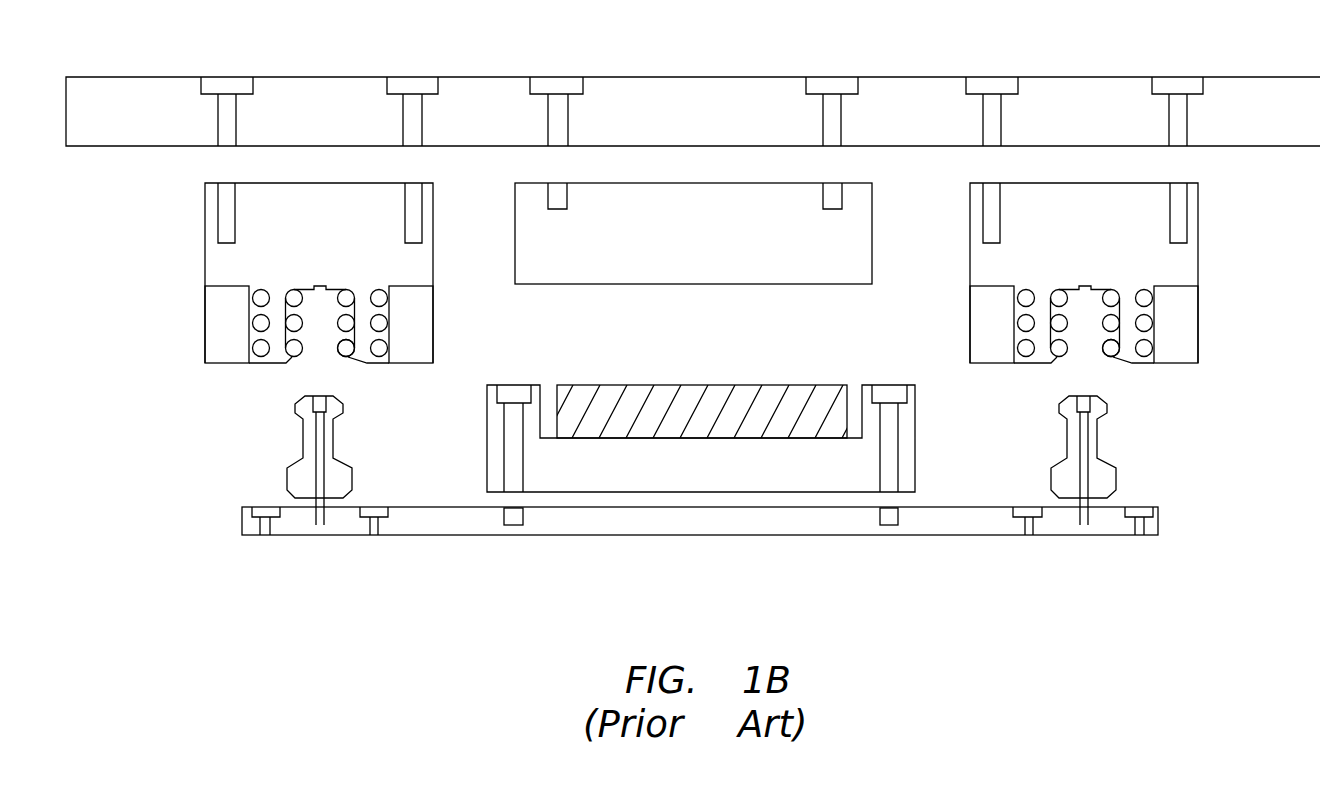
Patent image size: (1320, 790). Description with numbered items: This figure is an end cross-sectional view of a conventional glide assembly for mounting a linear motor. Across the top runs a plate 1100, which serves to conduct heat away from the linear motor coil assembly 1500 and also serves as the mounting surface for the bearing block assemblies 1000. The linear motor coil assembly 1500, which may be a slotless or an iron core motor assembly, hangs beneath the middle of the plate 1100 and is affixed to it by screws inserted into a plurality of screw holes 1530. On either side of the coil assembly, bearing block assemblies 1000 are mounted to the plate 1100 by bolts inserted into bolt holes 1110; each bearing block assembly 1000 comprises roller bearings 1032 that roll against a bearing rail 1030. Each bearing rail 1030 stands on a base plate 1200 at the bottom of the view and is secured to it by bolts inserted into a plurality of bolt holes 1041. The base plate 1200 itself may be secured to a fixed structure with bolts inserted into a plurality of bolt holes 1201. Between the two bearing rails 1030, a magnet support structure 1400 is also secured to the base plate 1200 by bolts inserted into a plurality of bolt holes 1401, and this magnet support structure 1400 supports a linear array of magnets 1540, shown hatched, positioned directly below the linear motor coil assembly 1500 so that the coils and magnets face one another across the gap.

The bearing block assembly 1000 is at (263, 259).
The bearing rail 1030 is at (300, 467).
The roller bearing 1032 is at (353, 354).
The bolt hole 1041 is at (340, 439).
The plate 1100 is at (648, 92).
The bolt hole 1110 is at (225, 86).
The base plate 1200 is at (670, 528).
The bolt hole 1201 is at (266, 532).
The magnet support structure 1400 is at (756, 476).
The bolt hole 1401 is at (507, 388).
The linear motor coil assembly 1500 is at (664, 258).
The screw hole 1530 is at (824, 84).
The linear array of magnets 1540 is at (631, 404).